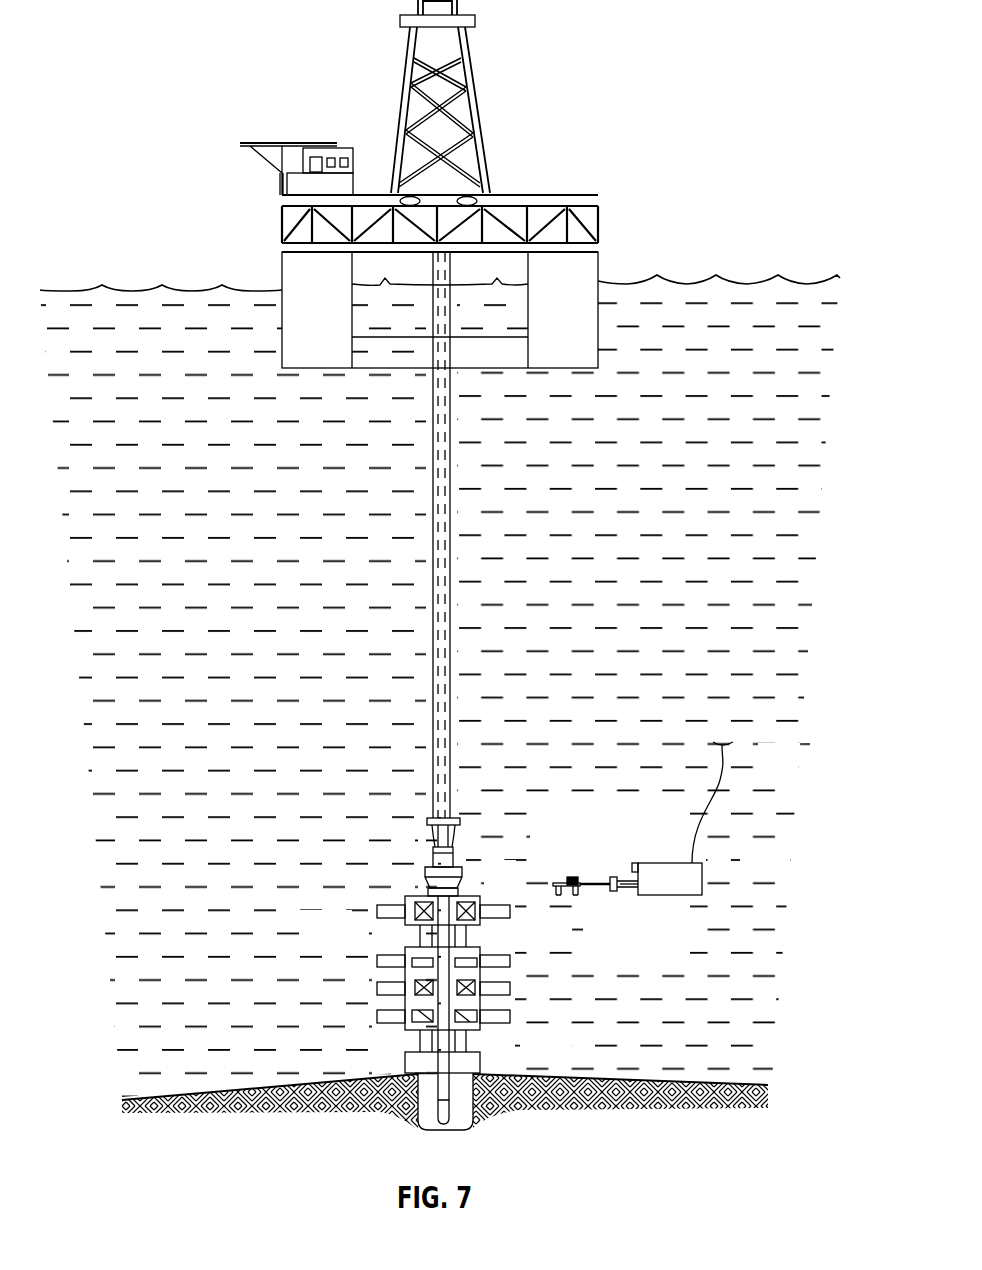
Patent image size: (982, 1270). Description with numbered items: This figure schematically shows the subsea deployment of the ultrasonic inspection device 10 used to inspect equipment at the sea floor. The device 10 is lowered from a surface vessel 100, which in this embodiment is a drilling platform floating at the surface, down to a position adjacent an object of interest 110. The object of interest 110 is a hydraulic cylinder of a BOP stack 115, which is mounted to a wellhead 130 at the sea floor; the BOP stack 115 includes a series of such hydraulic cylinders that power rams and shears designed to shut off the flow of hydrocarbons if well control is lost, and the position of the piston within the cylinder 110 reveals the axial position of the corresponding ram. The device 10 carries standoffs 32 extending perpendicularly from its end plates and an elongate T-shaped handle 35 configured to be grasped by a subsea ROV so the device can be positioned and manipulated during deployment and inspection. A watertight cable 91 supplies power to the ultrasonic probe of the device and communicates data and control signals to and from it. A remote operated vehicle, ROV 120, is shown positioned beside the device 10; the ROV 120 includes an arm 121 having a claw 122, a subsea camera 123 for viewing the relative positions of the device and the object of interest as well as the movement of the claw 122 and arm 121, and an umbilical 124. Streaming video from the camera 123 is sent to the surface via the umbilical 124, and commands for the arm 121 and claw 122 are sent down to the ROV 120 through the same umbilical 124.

The surface vessel 100 is at (471, 63).
The BOP stack 115 is at (438, 959).
The object of interest 110 is at (497, 960).
The wellhead 130 is at (485, 1065).
The ultrasonic inspection device 10 is at (567, 880).
The standoff 32 is at (553, 887).
The handle 35 is at (582, 888).
The arm 121 is at (616, 880).
The claw 122 is at (617, 890).
The cable 91 is at (624, 890).
The subsea camera 123 is at (635, 863).
The ROV 120 is at (702, 883).
The umbilical 124 is at (727, 778).